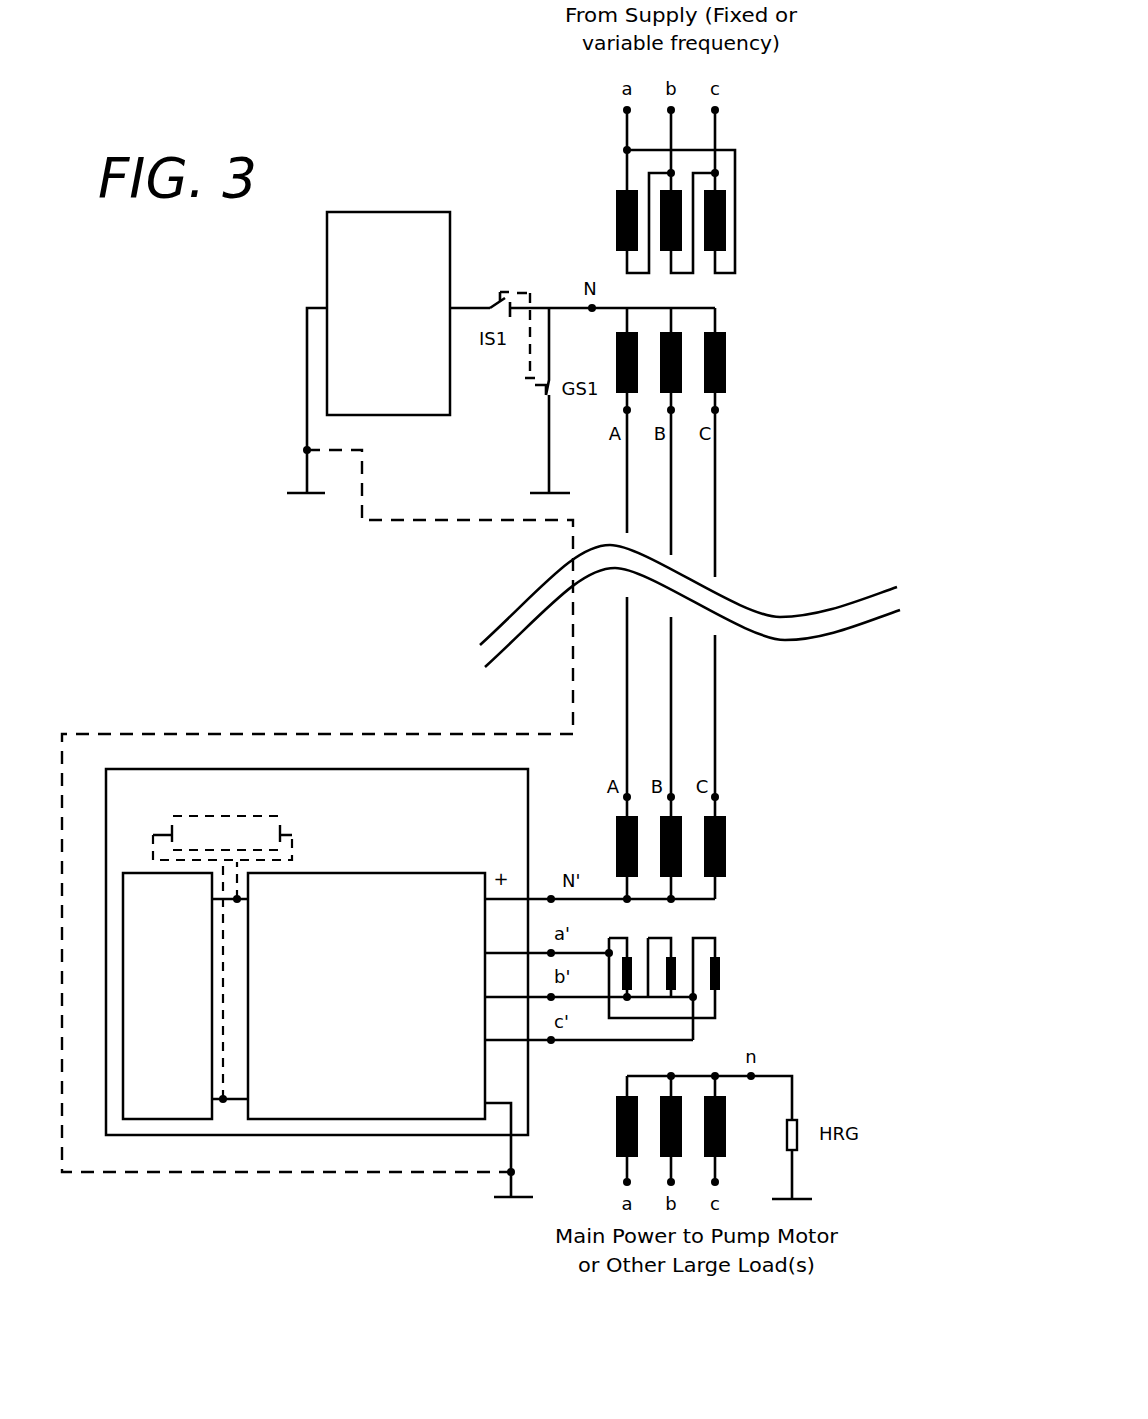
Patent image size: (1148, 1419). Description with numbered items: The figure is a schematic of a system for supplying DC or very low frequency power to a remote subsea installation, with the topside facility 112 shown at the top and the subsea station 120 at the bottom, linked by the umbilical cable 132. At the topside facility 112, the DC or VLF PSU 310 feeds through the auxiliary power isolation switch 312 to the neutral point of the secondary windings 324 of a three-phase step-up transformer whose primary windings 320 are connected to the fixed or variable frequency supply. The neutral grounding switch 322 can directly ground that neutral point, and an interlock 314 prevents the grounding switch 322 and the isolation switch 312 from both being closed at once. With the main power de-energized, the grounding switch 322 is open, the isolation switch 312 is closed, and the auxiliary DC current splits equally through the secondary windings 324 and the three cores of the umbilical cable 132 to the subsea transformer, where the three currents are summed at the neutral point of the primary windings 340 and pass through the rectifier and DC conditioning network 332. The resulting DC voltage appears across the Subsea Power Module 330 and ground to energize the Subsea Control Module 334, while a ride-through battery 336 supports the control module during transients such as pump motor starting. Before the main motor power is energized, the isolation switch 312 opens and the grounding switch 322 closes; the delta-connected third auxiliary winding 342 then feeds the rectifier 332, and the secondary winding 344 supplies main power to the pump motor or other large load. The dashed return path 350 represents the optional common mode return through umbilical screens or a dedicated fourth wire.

The topside facility 112 is at (865, 80).
The subsea station 120 is at (875, 732).
The umbilical cable 132 is at (742, 548).
The DC or VLF PSU 310 is at (435, 401).
The auxiliary power isolation switch IS1 312 is at (498, 293).
The interlock 314 is at (528, 376).
The primary windings 320 is at (766, 186).
The neutral grounding switch GS1 322 is at (543, 402).
The secondary windings 324 is at (754, 351).
The Subsea Power Module (SPM) 330 is at (488, 808).
The rectifier and DC conditioning network 332 is at (390, 1101).
The Subsea Control Module (SCM) 334 is at (148, 1067).
The ride-through battery 336 is at (243, 843).
The primary windings 340 is at (759, 838).
The third auxiliary winding 342 is at (747, 968).
The secondary winding 344 is at (606, 1104).
The return path 350 is at (372, 522).